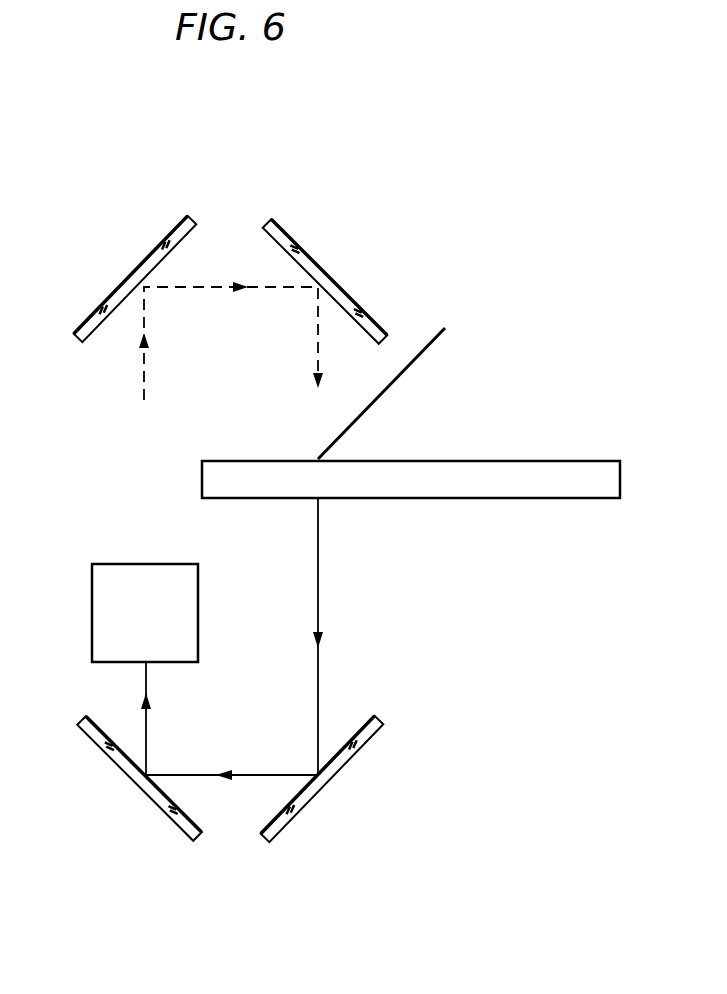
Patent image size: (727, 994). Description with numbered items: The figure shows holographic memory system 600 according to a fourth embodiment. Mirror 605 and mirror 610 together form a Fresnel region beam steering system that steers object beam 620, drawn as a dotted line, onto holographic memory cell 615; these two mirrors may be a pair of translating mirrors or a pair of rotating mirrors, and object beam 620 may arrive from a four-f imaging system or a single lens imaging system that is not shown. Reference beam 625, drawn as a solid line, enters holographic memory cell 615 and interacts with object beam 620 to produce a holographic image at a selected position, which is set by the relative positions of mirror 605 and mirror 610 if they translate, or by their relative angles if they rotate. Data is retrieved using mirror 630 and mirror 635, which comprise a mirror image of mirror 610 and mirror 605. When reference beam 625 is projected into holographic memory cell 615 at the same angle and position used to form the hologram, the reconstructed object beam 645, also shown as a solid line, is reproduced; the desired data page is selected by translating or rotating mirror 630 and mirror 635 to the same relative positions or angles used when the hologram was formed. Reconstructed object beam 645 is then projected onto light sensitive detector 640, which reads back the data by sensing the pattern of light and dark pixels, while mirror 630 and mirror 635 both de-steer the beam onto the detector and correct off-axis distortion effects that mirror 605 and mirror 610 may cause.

The holographic memory system 600 is at (229, 152).
The mirror 605 is at (157, 255).
The mirror 610 is at (306, 260).
The holographic memory cell 615 is at (510, 460).
The object beam 620 is at (143, 401).
The reference beam 625 is at (437, 340).
The mirror 630 is at (335, 775).
The mirror 635 is at (135, 780).
The light sensitive detector 640 is at (91, 606).
The reconstructed object beam 645 is at (320, 610).